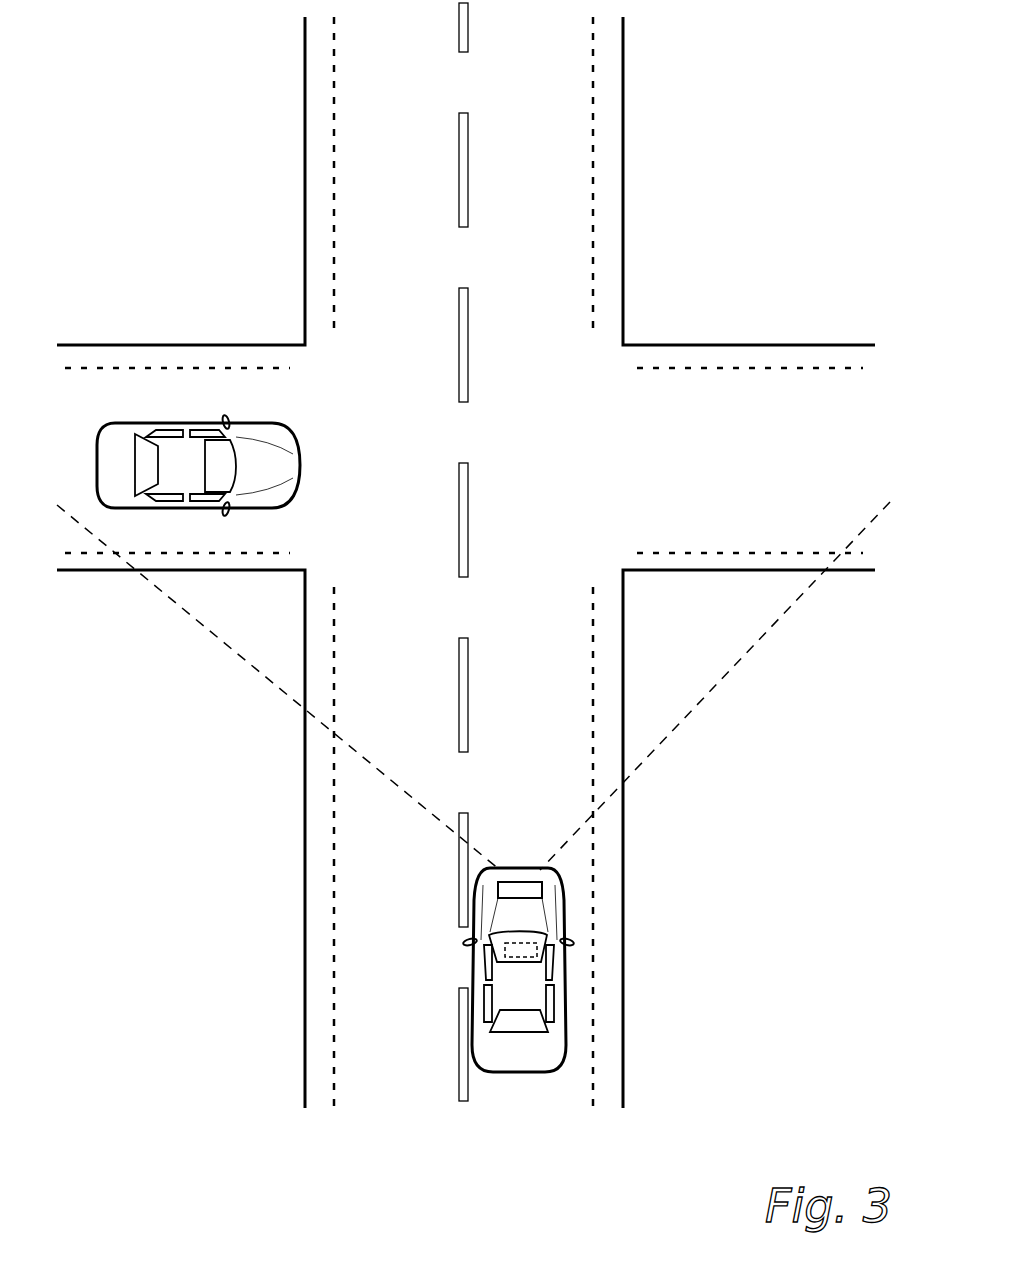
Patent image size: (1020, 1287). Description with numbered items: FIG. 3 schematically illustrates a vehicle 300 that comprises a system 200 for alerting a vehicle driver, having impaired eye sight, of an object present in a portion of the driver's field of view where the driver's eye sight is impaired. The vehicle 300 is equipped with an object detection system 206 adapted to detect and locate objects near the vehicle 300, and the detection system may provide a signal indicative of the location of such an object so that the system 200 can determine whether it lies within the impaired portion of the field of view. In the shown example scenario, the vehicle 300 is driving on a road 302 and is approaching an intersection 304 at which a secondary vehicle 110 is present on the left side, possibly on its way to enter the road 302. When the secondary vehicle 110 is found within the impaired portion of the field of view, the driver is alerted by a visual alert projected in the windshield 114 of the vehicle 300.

The secondary vehicle 110 is at (266, 427).
The windshield 114 is at (544, 938).
The system 200 is at (537, 952).
The object detection system 206 is at (543, 887).
The vehicle 300 is at (594, 996).
The road 302 is at (357, 783).
The intersection 304 is at (636, 326).